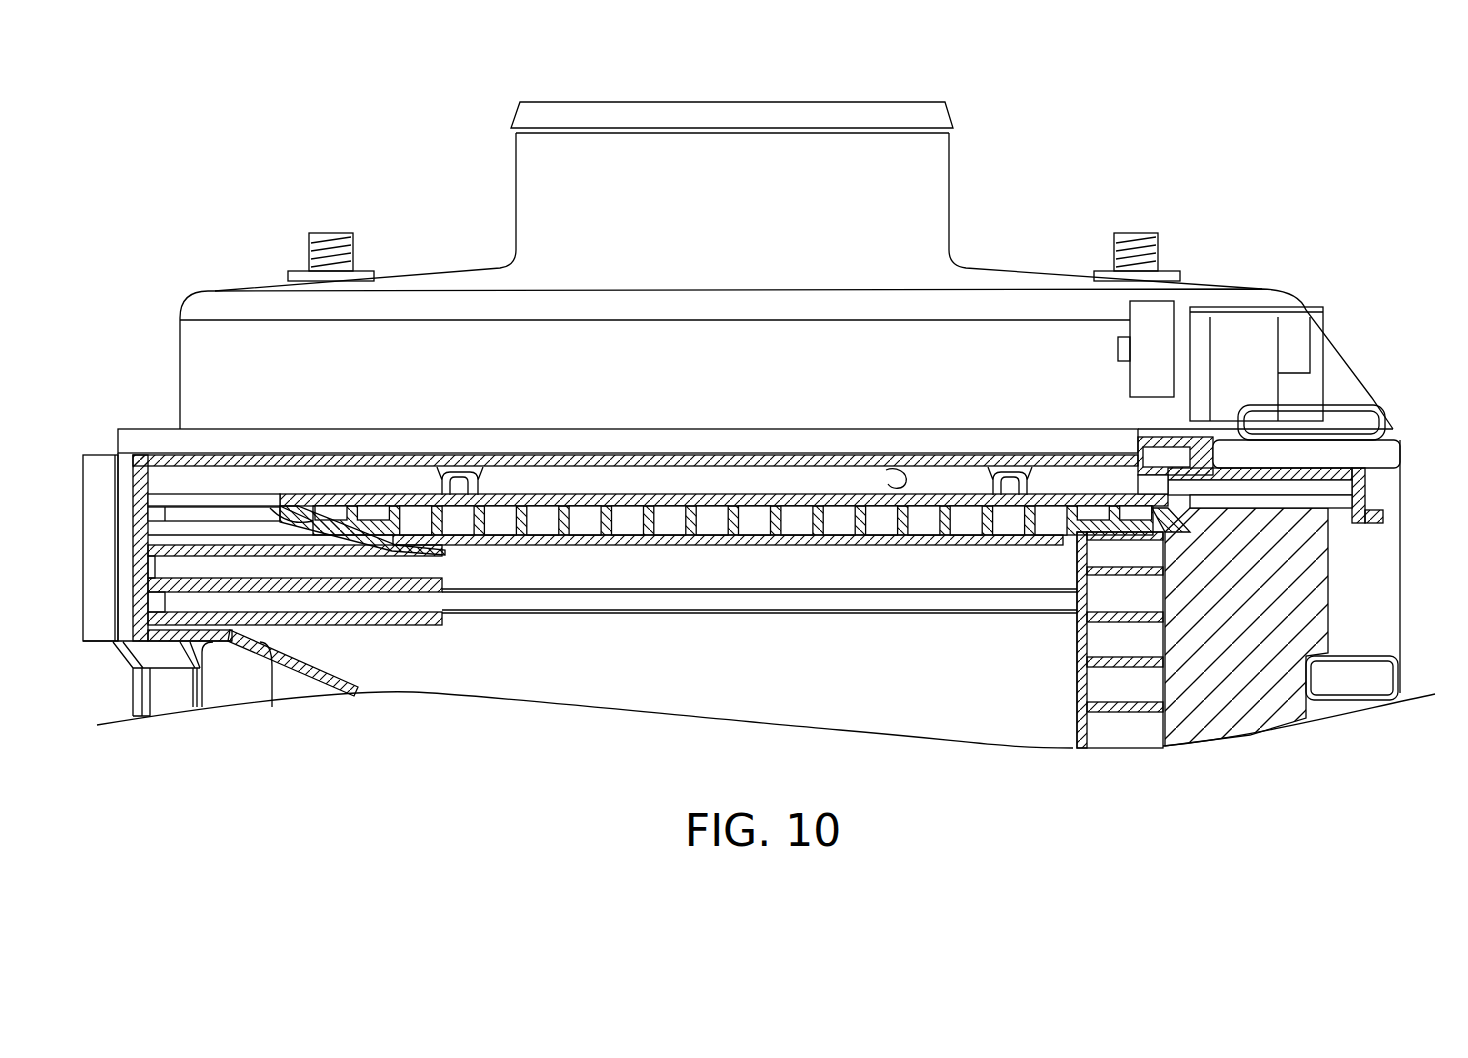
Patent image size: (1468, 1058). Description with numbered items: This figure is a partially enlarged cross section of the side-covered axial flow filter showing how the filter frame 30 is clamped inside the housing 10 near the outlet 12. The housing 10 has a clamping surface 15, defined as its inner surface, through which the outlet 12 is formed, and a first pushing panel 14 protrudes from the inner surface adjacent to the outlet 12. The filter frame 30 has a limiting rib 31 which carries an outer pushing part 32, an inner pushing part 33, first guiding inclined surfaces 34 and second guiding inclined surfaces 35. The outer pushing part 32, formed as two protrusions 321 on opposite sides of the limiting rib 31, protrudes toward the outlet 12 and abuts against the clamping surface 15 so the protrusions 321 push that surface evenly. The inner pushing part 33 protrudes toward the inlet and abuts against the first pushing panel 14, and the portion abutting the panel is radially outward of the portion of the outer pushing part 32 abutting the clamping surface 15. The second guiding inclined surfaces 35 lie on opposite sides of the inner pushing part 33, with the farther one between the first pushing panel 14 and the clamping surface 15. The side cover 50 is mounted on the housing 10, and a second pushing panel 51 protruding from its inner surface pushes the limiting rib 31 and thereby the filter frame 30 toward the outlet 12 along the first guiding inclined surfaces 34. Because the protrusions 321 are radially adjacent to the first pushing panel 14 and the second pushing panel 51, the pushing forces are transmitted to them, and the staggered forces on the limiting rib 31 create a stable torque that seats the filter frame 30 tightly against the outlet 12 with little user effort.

The housing 10 is at (185, 281).
The outlet 12 is at (862, 84).
The first pushing panel 14 is at (430, 552).
The clamping surface 15 is at (910, 478).
The filter frame 30 is at (716, 482).
The limiting rib 31 is at (834, 520).
The outer pushing part 32 is at (478, 460).
The protrusion 321 is at (452, 478).
The inner pushing part 33 is at (718, 548).
The first guiding inclined surface 34 is at (316, 512).
The second guiding inclined surface 35 is at (420, 537).
The side cover 50 is at (1318, 561).
The second pushing panel 51 is at (1074, 634).